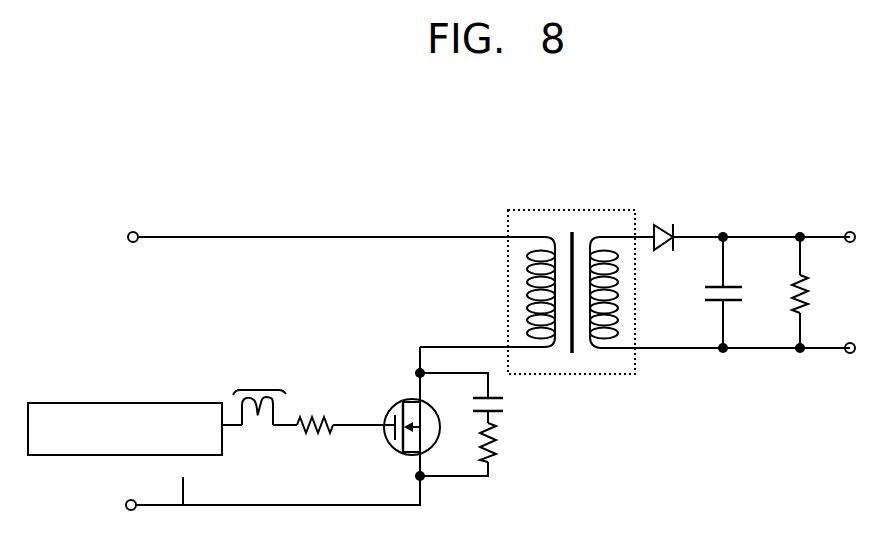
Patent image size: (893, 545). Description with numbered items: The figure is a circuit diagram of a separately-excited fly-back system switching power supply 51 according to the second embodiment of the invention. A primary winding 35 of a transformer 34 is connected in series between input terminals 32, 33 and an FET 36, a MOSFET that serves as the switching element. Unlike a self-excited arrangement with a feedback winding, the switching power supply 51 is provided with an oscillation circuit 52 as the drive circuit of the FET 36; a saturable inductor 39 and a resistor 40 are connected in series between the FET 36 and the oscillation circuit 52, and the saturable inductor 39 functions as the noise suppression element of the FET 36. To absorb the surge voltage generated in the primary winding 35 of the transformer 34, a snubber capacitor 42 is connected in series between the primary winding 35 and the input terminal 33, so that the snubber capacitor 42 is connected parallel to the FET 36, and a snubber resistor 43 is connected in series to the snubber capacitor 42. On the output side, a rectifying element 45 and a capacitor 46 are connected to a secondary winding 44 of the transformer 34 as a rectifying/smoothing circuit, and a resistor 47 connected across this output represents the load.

The input terminal 32 is at (131, 231).
The input terminal 33 is at (129, 499).
The transformer 34 is at (545, 266).
The primary winding 35 is at (527, 291).
The FET 36 is at (386, 409).
The saturable inductor 39 is at (258, 387).
The resistor 40 is at (321, 415).
The snubber capacitor 42 is at (505, 407).
The snubber resistor 43 is at (500, 444).
The secondary winding 44 is at (618, 291).
The rectifying element 45 is at (660, 222).
The capacitor 46 is at (740, 284).
The resistor 47 is at (808, 300).
The switching power supply 51 is at (313, 201).
The oscillation circuit 52 is at (183, 402).